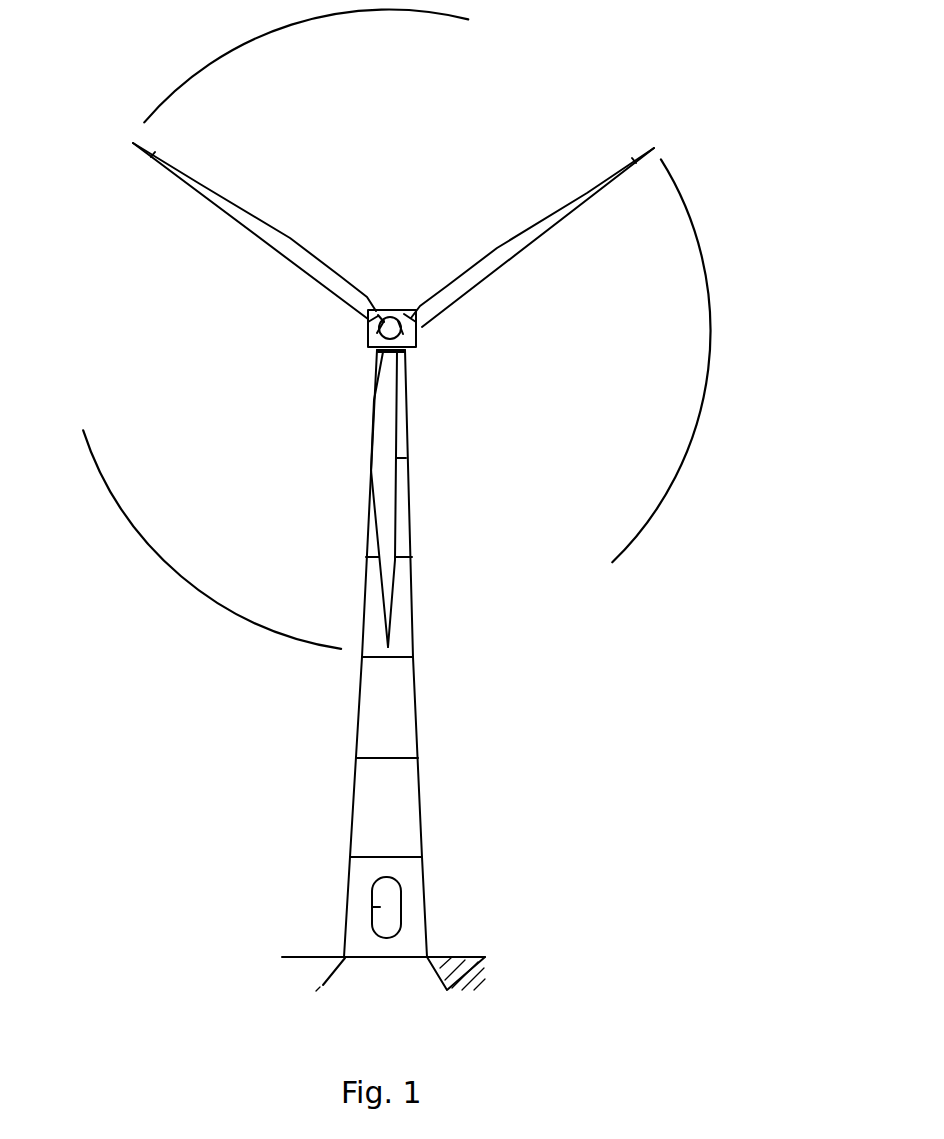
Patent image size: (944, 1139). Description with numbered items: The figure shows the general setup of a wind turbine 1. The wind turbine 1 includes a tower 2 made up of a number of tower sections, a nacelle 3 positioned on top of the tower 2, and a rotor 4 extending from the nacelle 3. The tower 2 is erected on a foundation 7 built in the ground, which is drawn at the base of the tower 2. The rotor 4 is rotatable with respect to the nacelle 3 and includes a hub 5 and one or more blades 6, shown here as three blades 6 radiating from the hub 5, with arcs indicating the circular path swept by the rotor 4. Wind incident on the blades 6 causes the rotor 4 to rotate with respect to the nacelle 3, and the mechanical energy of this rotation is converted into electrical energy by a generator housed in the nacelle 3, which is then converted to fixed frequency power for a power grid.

The wind turbine 1 is at (140, 737).
The tower 2 is at (403, 822).
The nacelle 3 is at (413, 342).
The rotor 4 is at (646, 522).
The hub 5 is at (368, 321).
The blades 6 is at (512, 257).
The foundation 7 is at (347, 971).